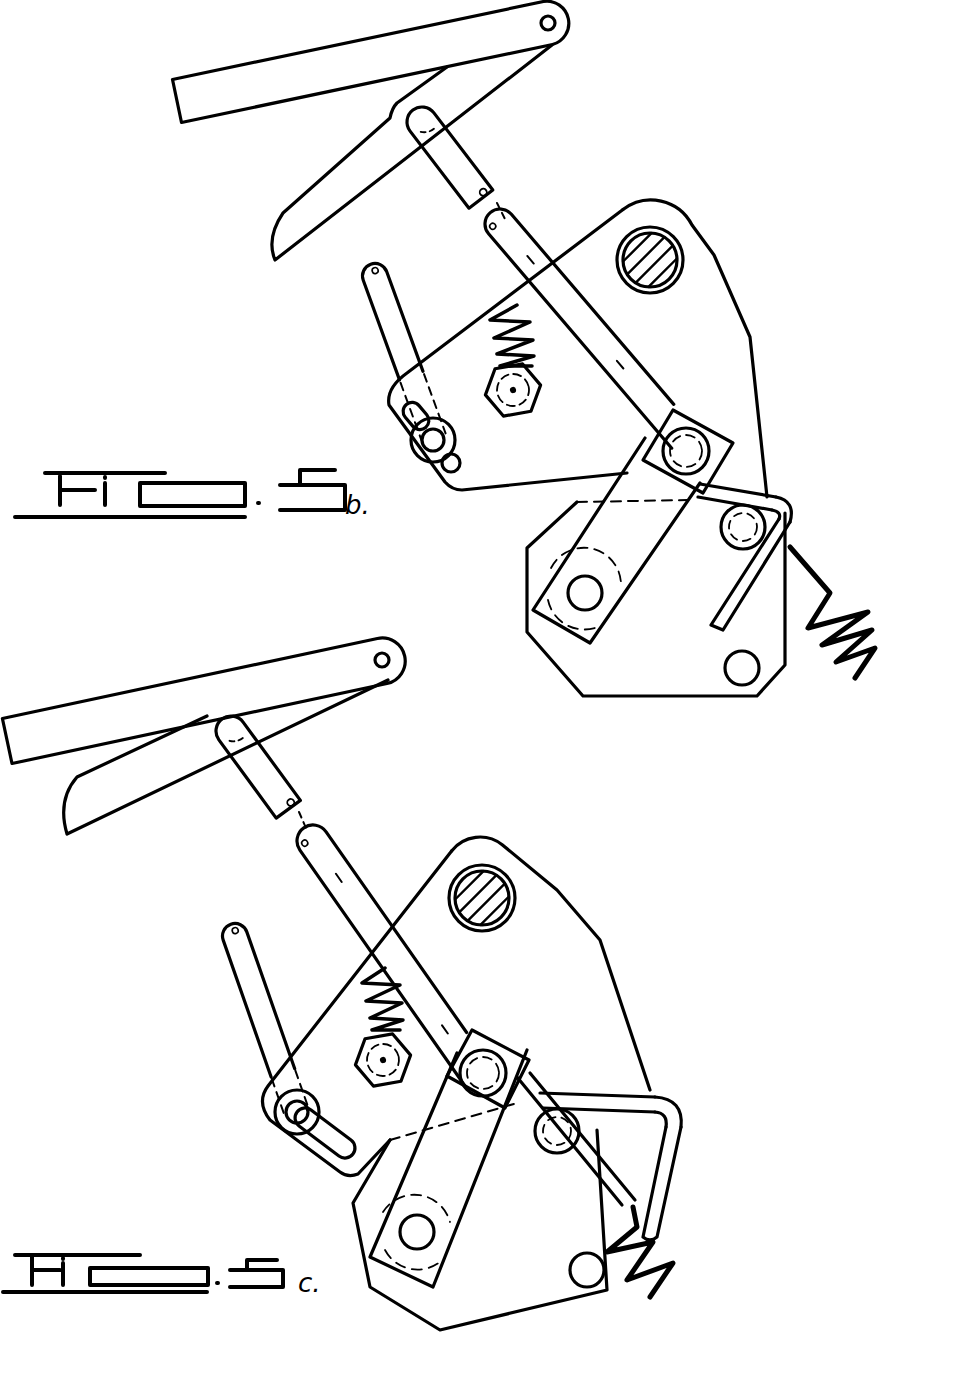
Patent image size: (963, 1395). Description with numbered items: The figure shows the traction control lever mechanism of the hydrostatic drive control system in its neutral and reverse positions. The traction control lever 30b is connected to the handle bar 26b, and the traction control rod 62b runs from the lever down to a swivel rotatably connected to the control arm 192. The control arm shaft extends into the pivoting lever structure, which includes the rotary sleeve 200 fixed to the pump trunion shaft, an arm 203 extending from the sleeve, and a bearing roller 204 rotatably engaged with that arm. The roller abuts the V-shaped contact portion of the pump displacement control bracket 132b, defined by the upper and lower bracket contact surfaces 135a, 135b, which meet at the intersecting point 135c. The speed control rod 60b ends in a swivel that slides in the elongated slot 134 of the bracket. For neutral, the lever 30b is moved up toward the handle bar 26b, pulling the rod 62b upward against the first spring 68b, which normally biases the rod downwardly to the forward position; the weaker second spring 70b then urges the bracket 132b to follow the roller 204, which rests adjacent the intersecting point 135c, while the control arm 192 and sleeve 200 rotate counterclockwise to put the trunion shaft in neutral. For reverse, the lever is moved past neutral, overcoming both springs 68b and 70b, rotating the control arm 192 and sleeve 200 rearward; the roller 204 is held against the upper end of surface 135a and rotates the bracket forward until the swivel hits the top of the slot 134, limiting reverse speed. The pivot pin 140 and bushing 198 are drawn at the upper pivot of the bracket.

In FIG. 5B, the handle bar 26b is at (248, 72).
In FIG. 5C, the handle bar 26b is at (118, 698).
In FIG. 5B, the traction control lever 30b is at (287, 214).
In FIG. 5C, the traction control lever 30b is at (123, 790).
In FIG. 5B, the traction control rod 62b is at (470, 175).
In FIG. 5C, the traction control rod 62b is at (280, 792).
In FIG. 5B, the second spring 70b is at (487, 333).
In FIG. 5C, the second spring 70b is at (362, 982).
In FIG. 5B, the pivot pin 140 is at (645, 225).
In FIG. 5C, the pivot pin 140 is at (488, 880).
In FIG. 5B, the bushing 198 is at (672, 245).
In FIG. 5C, the bushing 198 is at (500, 896).
In FIG. 5B, the pump displacement control bracket 132b is at (725, 268).
In FIG. 5C, the pump displacement control bracket 132b is at (598, 940).
In FIG. 5B, the speed control rod 60b is at (372, 310).
In FIG. 5C, the speed control rod 60b is at (247, 990).
In FIG. 5B, the elongated slot 134 is at (420, 425).
In FIG. 5B, the upper bracket contact surface 135a is at (712, 618).
In FIG. 5C, the upper bracket contact surface 135a is at (662, 1163).
In FIG. 5B, the lower bracket contact surface 135b is at (642, 480).
In FIG. 5C, the lower bracket contact surface 135b is at (615, 1093).
In FIG. 5B, the intersecting point 135c is at (773, 492).
In FIG. 5C, the intersecting point 135c is at (680, 1113).
In FIG. 5B, the control arm 192 is at (530, 548).
In FIG. 5C, the control arm 192 is at (355, 1200).
In FIG. 5B, the bearing roller 204 is at (732, 545).
In FIG. 5C, the bearing roller 204 is at (553, 1160).
In FIG. 5B, the rotary sleeve 200 is at (615, 685).
In FIG. 5C, the rotary sleeve 200 is at (486, 1300).
In FIG. 5B, the arm 203 is at (774, 622).
In FIG. 5C, the arm 203 is at (575, 1198).
In FIG. 5B, the first spring 68b is at (812, 548).
In FIG. 5C, the first spring 68b is at (675, 1266).